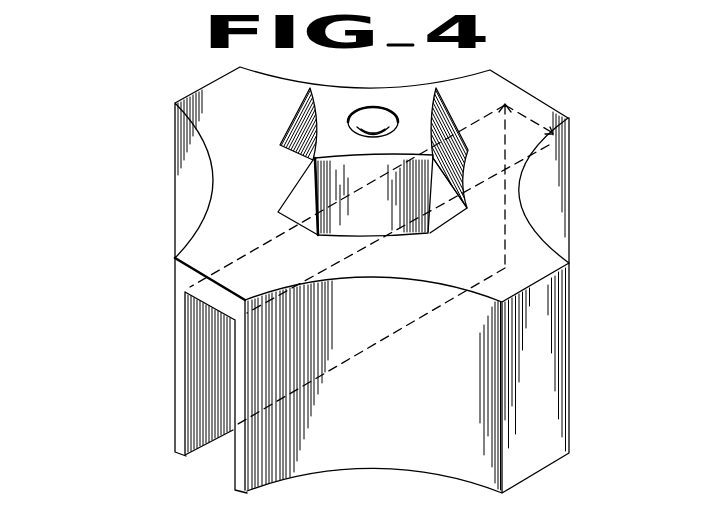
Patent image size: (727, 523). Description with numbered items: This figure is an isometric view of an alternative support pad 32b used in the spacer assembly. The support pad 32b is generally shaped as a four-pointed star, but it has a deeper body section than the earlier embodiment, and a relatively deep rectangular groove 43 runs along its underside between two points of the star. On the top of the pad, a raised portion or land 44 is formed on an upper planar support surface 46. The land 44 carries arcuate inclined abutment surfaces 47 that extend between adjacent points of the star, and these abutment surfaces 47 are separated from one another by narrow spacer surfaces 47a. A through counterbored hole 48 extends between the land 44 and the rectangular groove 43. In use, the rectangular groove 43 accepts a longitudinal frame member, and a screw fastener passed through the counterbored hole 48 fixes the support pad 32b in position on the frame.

The support pad 32b is at (160, 205).
The rectangular groove 43 is at (203, 302).
The land 44 is at (403, 95).
The upper planar support surface 46 is at (543, 248).
The arcuate inclined abutment surfaces 47 is at (443, 120).
The spacer surfaces 47a is at (307, 170).
The counterbored hole 48 is at (366, 108).